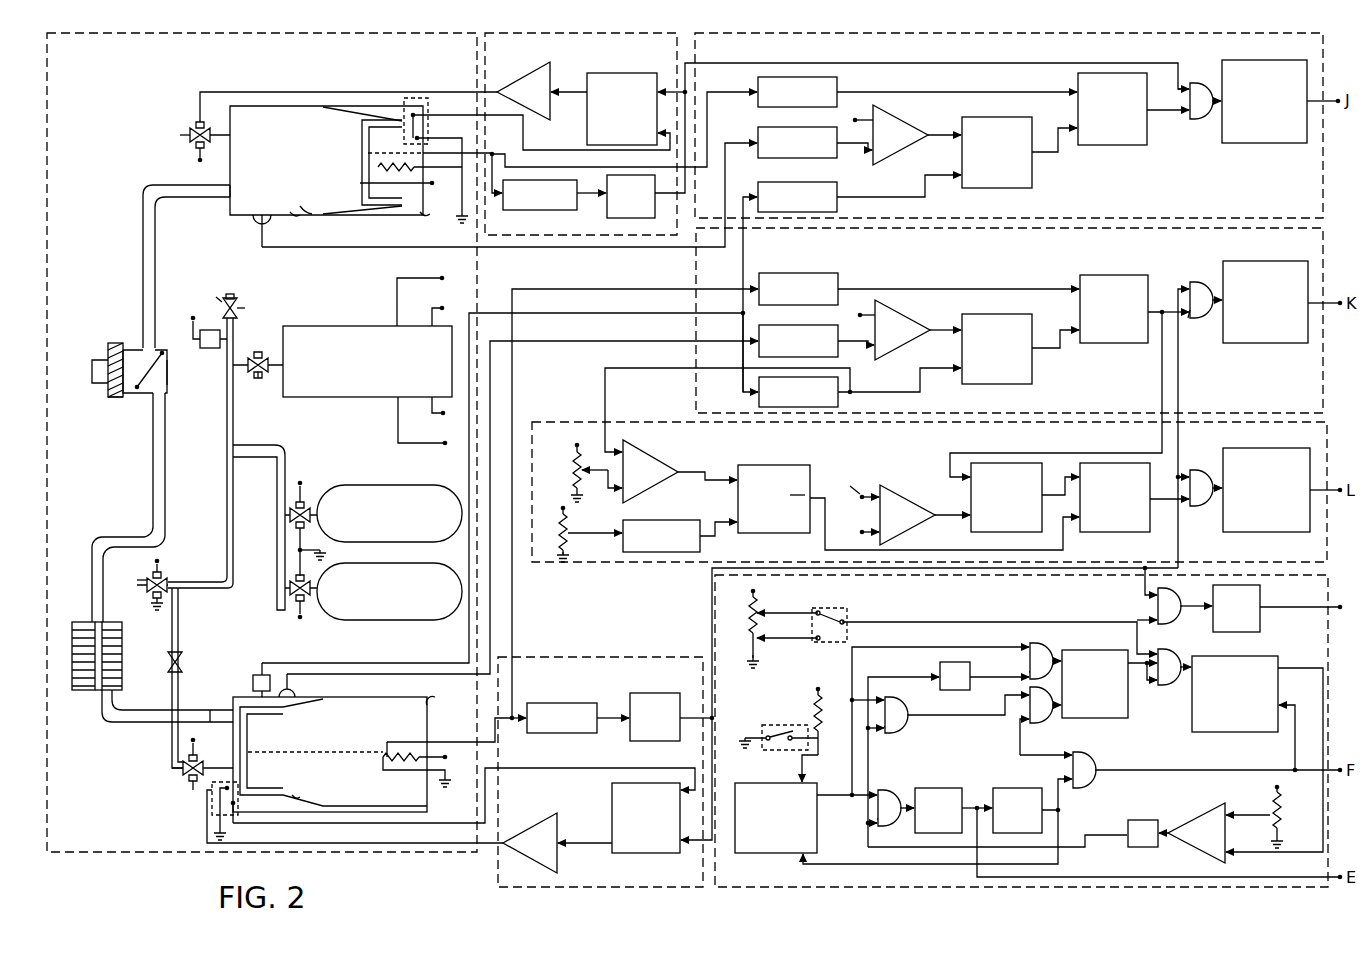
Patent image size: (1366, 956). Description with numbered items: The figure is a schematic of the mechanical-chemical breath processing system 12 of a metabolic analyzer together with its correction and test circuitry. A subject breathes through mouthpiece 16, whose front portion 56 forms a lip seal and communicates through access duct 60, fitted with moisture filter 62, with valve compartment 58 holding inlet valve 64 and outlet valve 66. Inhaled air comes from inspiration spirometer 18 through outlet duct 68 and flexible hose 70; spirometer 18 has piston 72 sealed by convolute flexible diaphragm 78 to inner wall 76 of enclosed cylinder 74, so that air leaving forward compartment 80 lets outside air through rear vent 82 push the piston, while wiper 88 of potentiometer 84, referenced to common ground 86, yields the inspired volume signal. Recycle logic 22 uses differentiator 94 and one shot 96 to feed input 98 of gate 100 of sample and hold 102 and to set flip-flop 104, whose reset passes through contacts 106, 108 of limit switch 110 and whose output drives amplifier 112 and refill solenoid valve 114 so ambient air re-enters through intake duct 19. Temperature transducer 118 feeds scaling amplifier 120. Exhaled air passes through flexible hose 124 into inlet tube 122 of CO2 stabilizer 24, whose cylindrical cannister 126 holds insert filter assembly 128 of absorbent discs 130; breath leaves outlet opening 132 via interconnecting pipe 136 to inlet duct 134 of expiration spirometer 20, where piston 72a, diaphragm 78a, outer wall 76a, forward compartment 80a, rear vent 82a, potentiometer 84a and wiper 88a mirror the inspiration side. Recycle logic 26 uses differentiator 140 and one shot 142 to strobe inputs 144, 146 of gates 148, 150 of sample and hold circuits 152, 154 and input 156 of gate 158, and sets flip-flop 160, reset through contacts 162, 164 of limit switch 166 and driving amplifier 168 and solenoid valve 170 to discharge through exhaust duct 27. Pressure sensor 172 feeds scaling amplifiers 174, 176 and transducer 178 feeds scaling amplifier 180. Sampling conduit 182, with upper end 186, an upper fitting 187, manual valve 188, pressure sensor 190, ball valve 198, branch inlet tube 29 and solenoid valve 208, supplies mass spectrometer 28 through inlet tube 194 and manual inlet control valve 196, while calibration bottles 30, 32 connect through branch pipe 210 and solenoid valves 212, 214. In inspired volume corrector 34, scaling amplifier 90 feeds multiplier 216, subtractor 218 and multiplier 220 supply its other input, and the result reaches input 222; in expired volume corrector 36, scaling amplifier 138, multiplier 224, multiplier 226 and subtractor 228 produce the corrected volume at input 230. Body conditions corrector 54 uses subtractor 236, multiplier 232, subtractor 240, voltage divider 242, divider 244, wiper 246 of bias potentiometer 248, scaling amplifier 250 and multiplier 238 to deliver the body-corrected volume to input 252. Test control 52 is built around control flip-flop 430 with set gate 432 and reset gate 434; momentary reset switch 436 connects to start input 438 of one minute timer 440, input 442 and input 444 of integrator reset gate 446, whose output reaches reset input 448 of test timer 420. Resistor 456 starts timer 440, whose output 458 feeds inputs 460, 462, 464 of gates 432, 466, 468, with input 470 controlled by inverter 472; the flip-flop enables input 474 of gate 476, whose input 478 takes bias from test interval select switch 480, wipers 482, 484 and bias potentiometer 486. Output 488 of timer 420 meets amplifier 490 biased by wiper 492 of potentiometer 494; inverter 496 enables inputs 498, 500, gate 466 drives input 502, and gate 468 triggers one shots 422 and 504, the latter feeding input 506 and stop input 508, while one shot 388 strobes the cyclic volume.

The mechanical-chemical breath processing system 12 is at (396, 73).
The mouthpiece 16 is at (97, 345).
The inspiration spirometer 18 is at (288, 168).
The intake duct 19 is at (196, 143).
The expiration spirometer 20 is at (337, 746).
The recycle logic 22 is at (670, 56).
The CO2 stabilizer 24 is at (126, 648).
The recycle logic 26 is at (677, 680).
The exhaust duct 27 is at (158, 780).
The mass spectrometer 28 is at (350, 326).
The branch inlet tube 29 is at (142, 582).
The pressurized calibration bottle 30 is at (380, 485).
The pressurized calibration bottle 32 is at (388, 622).
The inspired volume corrector 34 is at (1172, 56).
The expired volume corrector 36 is at (1172, 251).
The test control 52 is at (1084, 597).
The body conditions corrector 54 is at (1078, 444).
The front portion 56 is at (90, 368).
The valve compartment 58 is at (168, 388).
The access duct 60 is at (128, 350).
The moisture filter 62 is at (112, 400).
The inlet valve 64 is at (162, 350).
The outlet valve 66 is at (140, 392).
The outlet duct 68 is at (229, 190).
The flexible hose 70 is at (146, 196).
The piston 72 is at (360, 143).
The enclosed cylinder 74 is at (362, 226).
The inner wall 76 is at (297, 113).
The convolute flexible diaphragm 78 is at (332, 206).
The forward compartment 80 is at (295, 230).
The rear vent 82 is at (428, 226).
The potentiometer 84 is at (384, 158).
The common ground 86 is at (458, 225).
The wiper 88 is at (387, 159).
The scaling amplifier 90 is at (758, 88).
The differentiator 94 is at (550, 213).
The one shot 96 is at (617, 218).
The input 98 is at (1186, 99).
The gate 100 is at (1205, 88).
The sample and hold 102 is at (1275, 60).
The flip-flop 104 is at (587, 133).
The normally closed contact 106 is at (420, 116).
The normally closed contact 108 is at (439, 167).
The limit switch 110 is at (420, 101).
The amplifier 112 is at (527, 75).
The refill solenoid valve 114 is at (193, 131).
The temperature transducer 118 is at (255, 228).
The scaling amplifier 120 is at (758, 138).
The inlet tube 122 is at (120, 646).
The flexible hose 124 is at (150, 460).
The cylindrical cannister 126 is at (122, 675).
The insert filter assembly 128 is at (78, 620).
The absorbent disc 130 is at (86, 688).
The outlet opening 132 is at (112, 698).
The inlet duct 134 is at (230, 722).
The interconnecting pipe 136 is at (112, 730).
The scaling amplifier 138 is at (815, 273).
The differentiator 140 is at (585, 735).
The one shot 142 is at (665, 743).
The input 144 is at (1186, 292).
The input 146 is at (1196, 478).
The gate 148 is at (1198, 284).
The gate 150 is at (1206, 470).
The sample and hold 152 is at (1290, 352).
The sample and hold 154 is at (1292, 532).
The input 156 is at (1152, 598).
The gate 158 is at (1180, 603).
The flip-flop 160 is at (612, 810).
The closed contact 162 is at (220, 806).
The closed contact 164 is at (212, 790).
The limit switch 166 is at (215, 822).
The amplifier 168 is at (542, 823).
The solenoid valve 170 is at (182, 760).
The pressure sensor 172 is at (253, 683).
The scaling amplifier 174 is at (766, 182).
The scaling amplifier 176 is at (759, 398).
The temperature transducer 178 is at (296, 692).
The scaling amplifier 180 is at (815, 325).
The sampling conduit 182 is at (234, 445).
The upper end 186 is at (218, 299).
The valve cap 187 is at (232, 296).
The manual valve 188 is at (240, 308).
The pressure sensor 190 is at (222, 352).
The inlet tube 194 is at (276, 382).
The manual inlet control valve 196 is at (258, 357).
The ball valve 198 is at (183, 662).
The solenoid valve 208 is at (168, 585).
The branch pipe 210 is at (275, 458).
The solenoid valve 212 is at (288, 524).
The solenoid valve 214 is at (288, 596).
The multiplier 216 is at (1125, 150).
The subtractor 218 is at (890, 113).
The multiplier 220 is at (1006, 117).
The input 222 is at (1188, 121).
The multiplier 224 is at (1132, 350).
The multiplier 226 is at (1012, 314).
The subtractor 228 is at (891, 310).
The input 230 is at (1190, 322).
The multiplier 232 is at (972, 532).
The subtractor 236 is at (891, 500).
The multiplier 238 is at (1125, 532).
The subtractor 240 is at (655, 452).
The voltage divider 242 is at (581, 464).
The divider 244 is at (750, 533).
The wiper 246 is at (572, 550).
The bias potentiometer 248 is at (572, 530).
The scaling amplifier 250 is at (686, 520).
The input 252 is at (1196, 506).
The one shot 388 is at (1262, 590).
The test timer 420 is at (1265, 737).
The one shot 422 is at (916, 798).
The control flip-flop 430 is at (1095, 725).
The set gate 432 is at (1056, 656).
The reset gate 434 is at (1057, 715).
The momentary reset switch 436 is at (760, 755).
The start input 438 is at (803, 778).
The one minute timer 440 is at (780, 858).
The input 442 is at (1020, 722).
The input 444 is at (1068, 756).
The integrator reset gate 446 is at (1093, 764).
The reset input 448 is at (1278, 708).
The resistor 456 is at (808, 718).
The output 458 is at (819, 797).
The input 460 is at (1024, 652).
The input 462 is at (895, 706).
The input 464 is at (882, 797).
The gate 466 is at (968, 706).
The gate 468 is at (884, 832).
The input 470 is at (1026, 676).
The inverter 472 is at (938, 670).
The input 474 is at (1150, 684).
The gate 476 is at (1175, 700).
The input 478 is at (1160, 655).
The test interval select switch 480 is at (850, 636).
The wiper 482 is at (770, 620).
The wiper 484 is at (787, 631).
The bias potentiometer 486 is at (760, 608).
The output 488 is at (1278, 672).
The amplifier 490 is at (1210, 812).
The wiper 492 is at (1268, 824).
The potentiometer 494 is at (1272, 810).
The inverter 496 is at (1158, 850).
The input 498 is at (886, 735).
The input 500 is at (866, 822).
The input 502 is at (1024, 696).
The one shot 504 is at (993, 798).
The input 506 is at (1069, 798).
The stop input 508 is at (810, 858).
The piston 72a is at (248, 780).
The outer wall 76a is at (352, 810).
The convolute flexible diaphragm 78a is at (292, 800).
The forward compartment 80a is at (238, 742).
The rear vent 82a is at (431, 707).
The potentiometer 84a is at (385, 760).
The wiper 88a is at (390, 752).